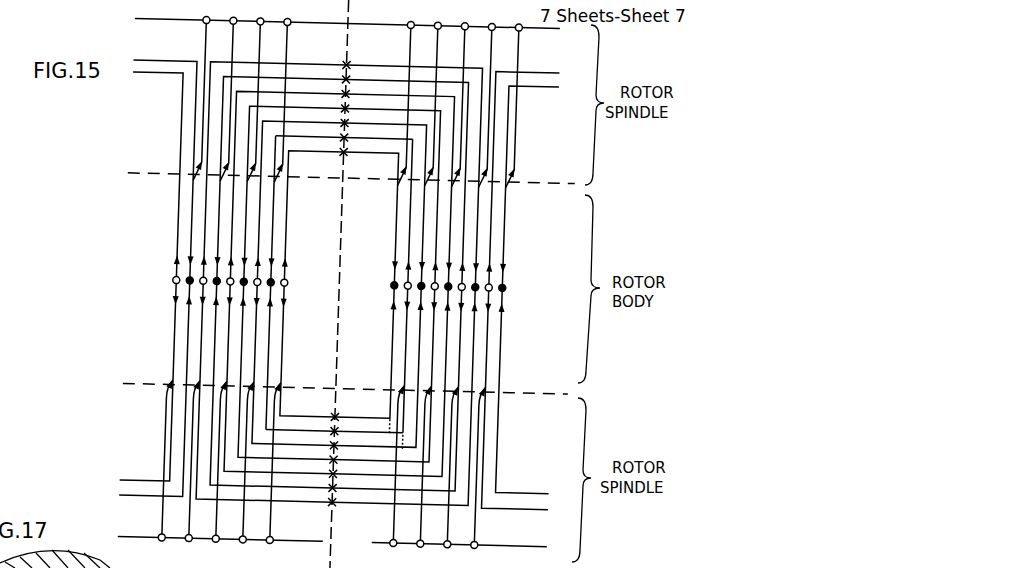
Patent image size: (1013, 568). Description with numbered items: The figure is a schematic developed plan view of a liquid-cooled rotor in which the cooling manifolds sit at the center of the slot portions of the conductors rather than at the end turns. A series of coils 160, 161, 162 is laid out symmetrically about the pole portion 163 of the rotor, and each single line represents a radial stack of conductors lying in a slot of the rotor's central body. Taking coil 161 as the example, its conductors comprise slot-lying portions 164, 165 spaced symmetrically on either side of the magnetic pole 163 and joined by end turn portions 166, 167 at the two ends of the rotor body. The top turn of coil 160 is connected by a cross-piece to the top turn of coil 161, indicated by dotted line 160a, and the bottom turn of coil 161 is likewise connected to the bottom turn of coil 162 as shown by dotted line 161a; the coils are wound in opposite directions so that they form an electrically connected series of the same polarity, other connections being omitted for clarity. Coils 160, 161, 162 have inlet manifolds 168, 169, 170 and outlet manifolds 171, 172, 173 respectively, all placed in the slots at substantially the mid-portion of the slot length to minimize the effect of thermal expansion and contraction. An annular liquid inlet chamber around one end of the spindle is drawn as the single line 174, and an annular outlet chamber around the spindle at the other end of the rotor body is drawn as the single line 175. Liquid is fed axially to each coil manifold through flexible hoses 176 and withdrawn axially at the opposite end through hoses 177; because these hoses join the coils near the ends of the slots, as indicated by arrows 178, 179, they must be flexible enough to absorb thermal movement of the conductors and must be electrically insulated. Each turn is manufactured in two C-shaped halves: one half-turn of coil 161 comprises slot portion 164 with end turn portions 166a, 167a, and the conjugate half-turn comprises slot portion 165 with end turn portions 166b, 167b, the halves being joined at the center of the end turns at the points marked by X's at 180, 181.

The coil 160 is at (400, 224).
The dotted line 160a is at (400, 426).
The coil 161 is at (414, 232).
The dotted line 161a is at (417, 434).
The coil 162 is at (427, 240).
The pole portion 163 is at (364, 300).
The slot-lying portion 164 is at (416, 352).
The slot-lying portion 165 is at (280, 347).
The end turn portion 166 is at (356, 428).
The end turn portion 166a is at (369, 433).
The end turn portion 166b is at (323, 430).
The end turn portion 167 is at (370, 140).
The end turn portion 167a is at (384, 138).
The end turn portion 167b is at (322, 138).
The inlet manifold 168 is at (294, 283).
The inlet manifold 169 is at (402, 287).
The inlet manifold 170 is at (280, 283).
The outlet manifold 171 is at (402, 283).
The outlet manifold 172 is at (280, 284).
The outlet manifold 173 is at (430, 288).
The annular liquid inlet chamber 174 is at (310, 528).
The annular outlet chamber 175 is at (330, 23).
The flexible hoses 176 is at (436, 516).
The hoses 177 is at (436, 49).
The arrow 178 is at (435, 390).
The arrow 179 is at (437, 178).
The joining point 180 is at (342, 478).
The joining point 181 is at (345, 108).